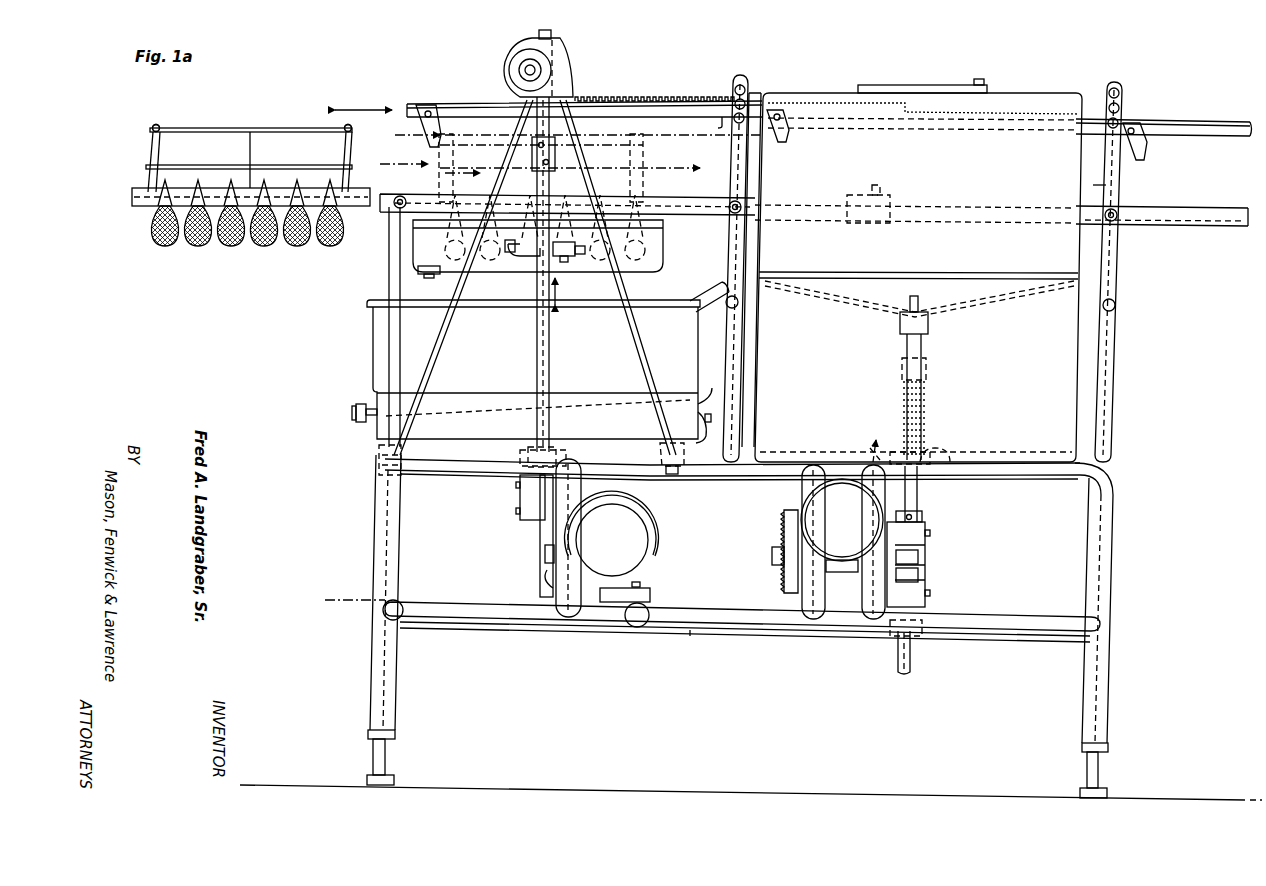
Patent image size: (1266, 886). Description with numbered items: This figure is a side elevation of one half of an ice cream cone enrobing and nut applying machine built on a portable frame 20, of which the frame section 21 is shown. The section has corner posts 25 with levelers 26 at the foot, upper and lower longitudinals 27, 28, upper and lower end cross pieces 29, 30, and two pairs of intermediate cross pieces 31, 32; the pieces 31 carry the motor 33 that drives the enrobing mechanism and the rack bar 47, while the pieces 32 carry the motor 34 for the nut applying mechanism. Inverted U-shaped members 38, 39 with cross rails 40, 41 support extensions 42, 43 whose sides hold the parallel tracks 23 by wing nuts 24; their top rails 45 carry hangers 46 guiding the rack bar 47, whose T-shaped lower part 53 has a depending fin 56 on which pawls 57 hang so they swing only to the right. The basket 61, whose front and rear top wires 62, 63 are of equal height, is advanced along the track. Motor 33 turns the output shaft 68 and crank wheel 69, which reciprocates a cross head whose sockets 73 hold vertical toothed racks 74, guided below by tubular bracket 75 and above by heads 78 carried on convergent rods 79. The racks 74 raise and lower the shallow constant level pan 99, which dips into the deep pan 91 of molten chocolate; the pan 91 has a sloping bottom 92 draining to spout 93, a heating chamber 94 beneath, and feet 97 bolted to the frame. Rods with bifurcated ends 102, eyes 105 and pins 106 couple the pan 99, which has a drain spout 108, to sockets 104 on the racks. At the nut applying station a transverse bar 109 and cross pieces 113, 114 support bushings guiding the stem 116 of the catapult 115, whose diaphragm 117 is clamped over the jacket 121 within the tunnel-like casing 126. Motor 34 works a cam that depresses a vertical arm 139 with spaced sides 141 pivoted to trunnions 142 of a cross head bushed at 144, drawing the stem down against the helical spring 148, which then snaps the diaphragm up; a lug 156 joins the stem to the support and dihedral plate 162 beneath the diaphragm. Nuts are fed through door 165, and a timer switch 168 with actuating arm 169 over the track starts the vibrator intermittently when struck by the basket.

The portable frame 20 is at (688, 636).
The frame section 21 is at (1090, 546).
The track 23 is at (140, 205).
The wing nuts 24 is at (400, 196).
The corner posts 25 is at (396, 668).
The levelers 26 is at (392, 758).
The upper longitudinals 27 is at (722, 479).
The lower longitudinals 28 is at (724, 636).
The upper end cross pieces 29 is at (378, 450).
The lower end cross pieces 30 is at (400, 604).
The intermediate cross pieces 31 is at (684, 470).
The intermediate cross pieces 32 is at (852, 632).
The motor 33 is at (600, 548).
The motor 34 is at (858, 508).
The inverted U-shaped member 38 is at (740, 336).
The inverted U-shaped member 39 is at (1112, 352).
The cross rail 40 is at (740, 302).
The cross rail 41 is at (1117, 306).
The inverted U-shaped extension 42 is at (754, 188).
The inverted U-shaped extension 43 is at (1112, 192).
The top rails 45 is at (742, 76).
The hangers 46 is at (746, 94).
The rack bar 47 is at (636, 98).
The lower part of rack bar 53 is at (486, 104).
The stiffening fin 56 is at (716, 127).
The pawls 57 is at (428, 132).
The basket 61 is at (247, 152).
The top wire 62 is at (352, 129).
The top wire 63 is at (150, 131).
The output shaft 68 is at (548, 586).
The crank wheel 69 is at (545, 568).
The sockets 73 is at (520, 497).
The toothed racks 74 is at (549, 336).
The tubular bracket 75 is at (544, 447).
The heads 78 is at (562, 72).
The rods 79 is at (456, 288).
The pan 91 is at (372, 334).
The bottom of pan 92 is at (474, 412).
The discharge spout 93 is at (353, 412).
The heating chamber 94 is at (592, 422).
The feet 97 is at (706, 418).
The constant level pan 99 is at (662, 258).
The bifurcated ends 102 is at (560, 256).
The sockets 104 is at (557, 150).
The eyes 105 is at (516, 258).
The pins 106 is at (582, 252).
The drain spout 108 is at (432, 266).
The flat transverse bar 109 is at (922, 632).
The cross piece 113 is at (872, 443).
The cross piece 114 is at (940, 460).
The catapult 115 is at (930, 330).
The stem 116 is at (918, 488).
The diaphragm 117 is at (955, 300).
The sheet metal jacket 121 is at (843, 359).
The tunnel-like casing 126 is at (955, 181).
The vertical arm 139 is at (928, 582).
The spaced sides 141 is at (926, 562).
The trunnions 142 is at (930, 534).
The bushing 144 is at (924, 516).
The helical spring 148 is at (925, 422).
The U-shaped lug 156 is at (900, 330).
The plate 162 is at (968, 300).
The door 165 is at (956, 85).
The timer switch 168 is at (860, 195).
The actuating arm 169 is at (882, 186).